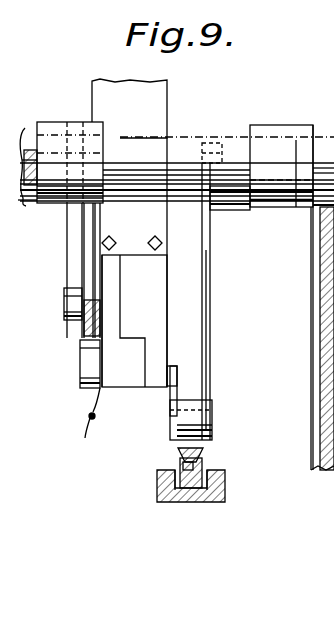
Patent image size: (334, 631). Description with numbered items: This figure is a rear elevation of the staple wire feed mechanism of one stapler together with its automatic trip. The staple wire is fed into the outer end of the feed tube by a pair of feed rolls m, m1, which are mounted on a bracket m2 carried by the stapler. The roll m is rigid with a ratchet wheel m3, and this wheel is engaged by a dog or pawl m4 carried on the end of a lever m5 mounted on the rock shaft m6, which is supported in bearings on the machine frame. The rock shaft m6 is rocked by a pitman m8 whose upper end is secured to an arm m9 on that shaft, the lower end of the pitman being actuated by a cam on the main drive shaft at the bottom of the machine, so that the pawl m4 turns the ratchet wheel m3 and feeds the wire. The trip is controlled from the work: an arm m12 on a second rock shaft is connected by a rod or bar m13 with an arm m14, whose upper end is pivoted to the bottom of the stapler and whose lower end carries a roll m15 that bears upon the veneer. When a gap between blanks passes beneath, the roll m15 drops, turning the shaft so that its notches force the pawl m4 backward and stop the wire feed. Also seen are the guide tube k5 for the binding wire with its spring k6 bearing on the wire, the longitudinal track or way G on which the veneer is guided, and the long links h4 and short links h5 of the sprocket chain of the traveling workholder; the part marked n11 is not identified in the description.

The feed roll m is at (85, 333).
The feed roll m1 is at (88, 372).
The bracket m2 is at (140, 380).
The ratchet wheel m3 is at (76, 302).
The dog or pawl m4 is at (78, 247).
The lever m5 is at (96, 128).
The rock shaft m6 is at (231, 147).
The pitman m8 is at (330, 277).
The arm m9 is at (302, 180).
The arm m12 is at (218, 143).
The rod or bar m13 is at (210, 343).
The arm m14 is at (180, 379).
The roll m15 is at (205, 436).
The bracket n11 is at (26, 196).
The guide tube k5 is at (78, 437).
The spring k6 is at (90, 414).
The long link h4 is at (200, 452).
The short link h5 is at (205, 502).
The longitudinal track or way G is at (157, 490).